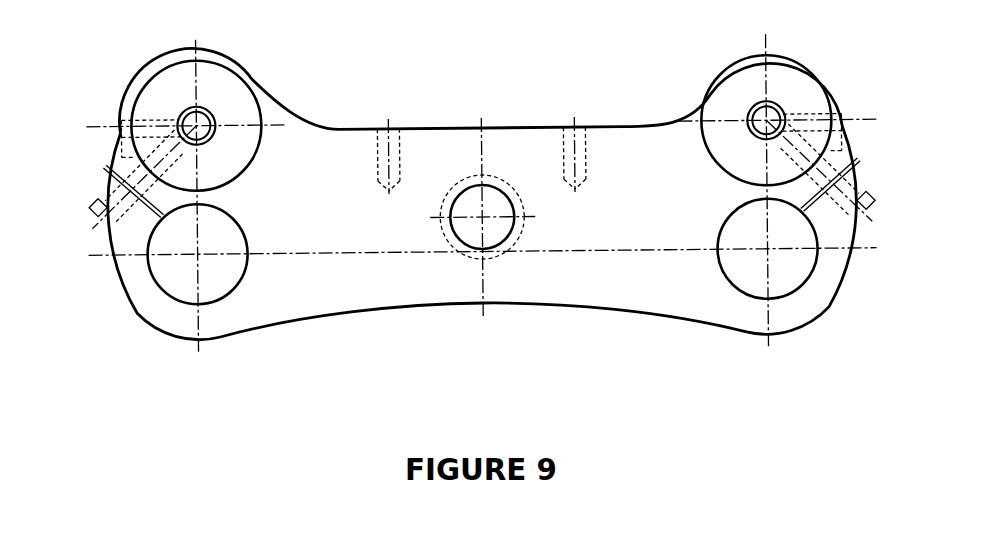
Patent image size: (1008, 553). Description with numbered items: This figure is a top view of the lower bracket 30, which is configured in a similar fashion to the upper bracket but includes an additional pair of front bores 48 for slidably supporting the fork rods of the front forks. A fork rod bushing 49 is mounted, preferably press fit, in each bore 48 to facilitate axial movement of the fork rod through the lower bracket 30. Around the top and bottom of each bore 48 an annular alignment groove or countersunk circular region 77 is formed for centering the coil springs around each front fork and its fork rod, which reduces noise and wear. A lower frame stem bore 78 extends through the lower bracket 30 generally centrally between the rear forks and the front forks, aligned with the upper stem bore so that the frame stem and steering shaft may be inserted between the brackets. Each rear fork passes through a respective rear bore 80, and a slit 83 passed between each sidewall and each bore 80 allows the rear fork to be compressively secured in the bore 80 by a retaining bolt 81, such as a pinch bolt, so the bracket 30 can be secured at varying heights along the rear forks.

The lower bracket 30 is at (430, 308).
The annular alignment groove 77 is at (202, 51).
The bore 48 is at (182, 110).
The fork rod bushing 49 is at (212, 104).
The lower frame stem bore 78 is at (473, 183).
The rear bore 80 is at (185, 302).
The retaining bolt 81 is at (121, 210).
The slit 83 is at (147, 210).